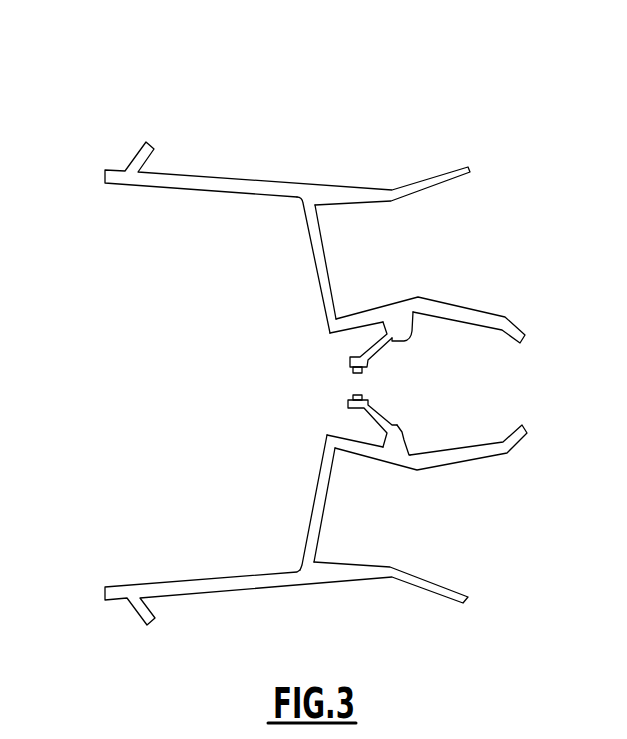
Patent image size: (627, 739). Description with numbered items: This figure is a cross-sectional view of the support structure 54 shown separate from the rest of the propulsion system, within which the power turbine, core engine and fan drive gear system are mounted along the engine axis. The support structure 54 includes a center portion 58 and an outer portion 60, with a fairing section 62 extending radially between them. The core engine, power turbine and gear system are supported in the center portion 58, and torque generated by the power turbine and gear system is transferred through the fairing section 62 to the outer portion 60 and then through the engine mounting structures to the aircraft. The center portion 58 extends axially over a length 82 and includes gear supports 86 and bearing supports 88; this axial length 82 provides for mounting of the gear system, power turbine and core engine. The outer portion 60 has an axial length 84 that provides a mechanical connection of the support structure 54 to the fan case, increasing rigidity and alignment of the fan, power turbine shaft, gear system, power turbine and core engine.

The support structure 54 is at (125, 51).
The outer portion 60 is at (567, 118).
The fairing section 62 is at (567, 202).
The center portion 58 is at (567, 305).
The gear supports 86 is at (402, 323).
The bearing supports 88 is at (335, 378).
The axial length 84 is at (105, 113).
The axial length 82 is at (335, 450).